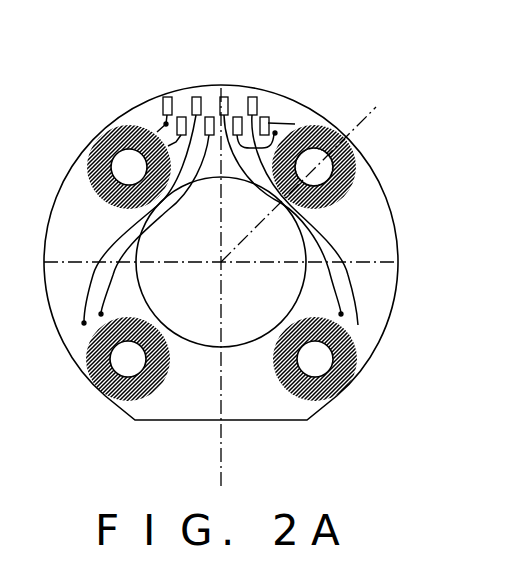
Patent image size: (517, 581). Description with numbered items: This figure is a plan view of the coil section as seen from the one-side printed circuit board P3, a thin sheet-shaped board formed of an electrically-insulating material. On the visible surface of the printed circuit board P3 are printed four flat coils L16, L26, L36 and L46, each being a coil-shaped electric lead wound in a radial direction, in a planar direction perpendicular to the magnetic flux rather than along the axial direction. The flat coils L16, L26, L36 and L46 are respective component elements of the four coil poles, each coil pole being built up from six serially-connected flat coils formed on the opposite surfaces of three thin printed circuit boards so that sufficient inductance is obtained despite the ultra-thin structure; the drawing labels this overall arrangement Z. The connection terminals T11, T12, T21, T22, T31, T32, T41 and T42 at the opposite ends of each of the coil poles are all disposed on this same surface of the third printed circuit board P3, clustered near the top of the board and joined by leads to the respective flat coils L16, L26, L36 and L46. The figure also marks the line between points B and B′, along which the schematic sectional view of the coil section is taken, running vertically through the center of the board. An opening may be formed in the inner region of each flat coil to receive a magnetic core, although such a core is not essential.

The connection terminal T11 is at (165, 98).
The connection terminal T12 is at (181, 117).
The connection terminal T21 is at (196, 97).
The connection terminal T22 is at (209, 117).
The connection terminal T31 is at (224, 97).
The connection terminal T32 is at (238, 117).
The connection terminal T41 is at (253, 97).
The connection terminal T42 is at (268, 117).
The flat coil L16 is at (93, 176).
The flat coil L26 is at (156, 388).
The flat coil L36 is at (284, 388).
The flat coil L46 is at (340, 197).
The printed circuit board P3 is at (398, 233).
The transformer Z is at (80, 127).
The section line B-B' B is at (379, 104).
The section line B-B' B′ is at (224, 472).